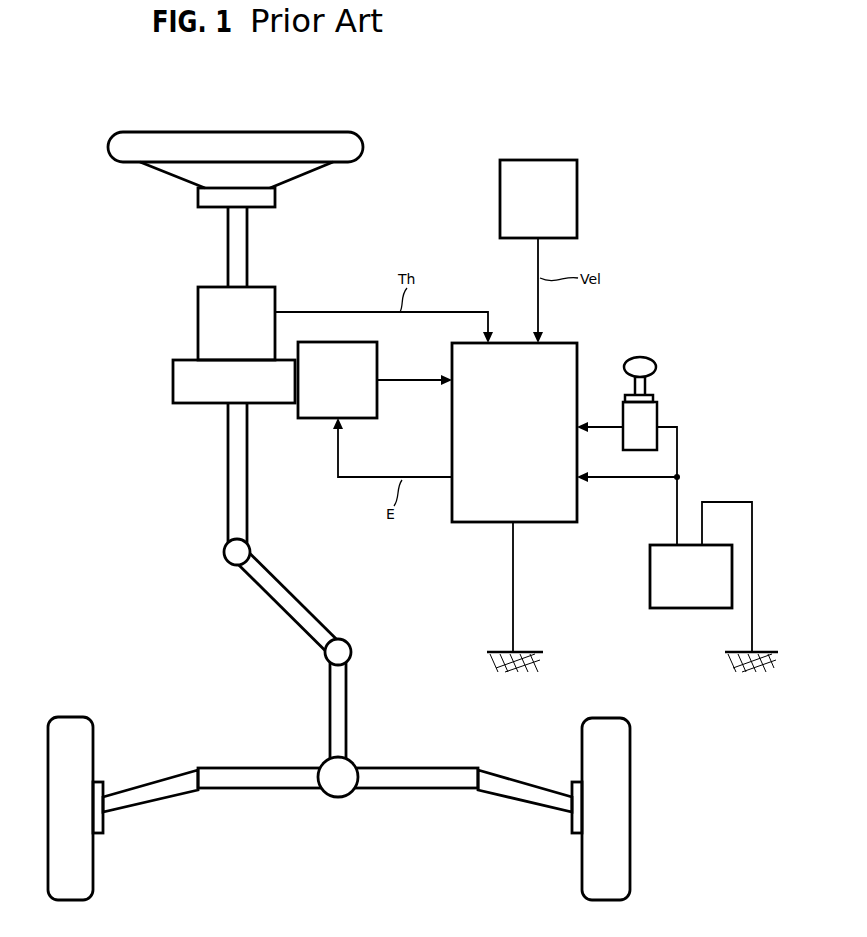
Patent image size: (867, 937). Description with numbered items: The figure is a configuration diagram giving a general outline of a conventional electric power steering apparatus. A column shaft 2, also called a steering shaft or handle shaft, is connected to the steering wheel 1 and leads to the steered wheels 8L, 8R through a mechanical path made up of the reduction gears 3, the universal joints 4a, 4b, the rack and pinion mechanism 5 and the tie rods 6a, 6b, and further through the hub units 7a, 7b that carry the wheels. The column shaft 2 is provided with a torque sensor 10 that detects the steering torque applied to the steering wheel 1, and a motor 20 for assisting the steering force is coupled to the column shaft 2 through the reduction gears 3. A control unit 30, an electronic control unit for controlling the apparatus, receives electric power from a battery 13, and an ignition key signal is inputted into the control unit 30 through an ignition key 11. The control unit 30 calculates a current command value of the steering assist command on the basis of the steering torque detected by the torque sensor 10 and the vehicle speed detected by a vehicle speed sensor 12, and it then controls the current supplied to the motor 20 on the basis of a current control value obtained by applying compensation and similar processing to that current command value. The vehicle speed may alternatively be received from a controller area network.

The steering wheel 1 is at (363, 147).
The column shaft 2 is at (228, 252).
The reduction gears 3 is at (173, 385).
The universal joint 4a is at (225, 560).
The universal joint 4b is at (325, 660).
The rack and pinion mechanism 5 is at (353, 762).
The tie rod 6a is at (135, 782).
The tie rod 6b is at (505, 772).
The hub unit 7a is at (105, 833).
The hub unit 7b is at (571, 830).
The steered wheel 8L is at (97, 890).
The steered wheel 8R is at (581, 886).
The torque sensor 10 is at (198, 318).
The ignition key 11 is at (656, 364).
The vehicle speed sensor 12 is at (577, 170).
The battery 13 is at (650, 572).
The motor 20 is at (377, 347).
The control unit 30 is at (578, 346).